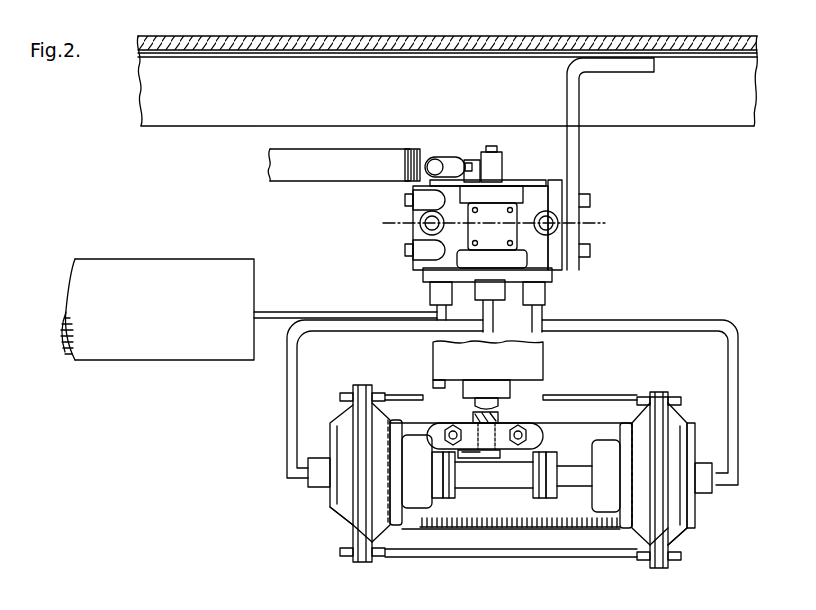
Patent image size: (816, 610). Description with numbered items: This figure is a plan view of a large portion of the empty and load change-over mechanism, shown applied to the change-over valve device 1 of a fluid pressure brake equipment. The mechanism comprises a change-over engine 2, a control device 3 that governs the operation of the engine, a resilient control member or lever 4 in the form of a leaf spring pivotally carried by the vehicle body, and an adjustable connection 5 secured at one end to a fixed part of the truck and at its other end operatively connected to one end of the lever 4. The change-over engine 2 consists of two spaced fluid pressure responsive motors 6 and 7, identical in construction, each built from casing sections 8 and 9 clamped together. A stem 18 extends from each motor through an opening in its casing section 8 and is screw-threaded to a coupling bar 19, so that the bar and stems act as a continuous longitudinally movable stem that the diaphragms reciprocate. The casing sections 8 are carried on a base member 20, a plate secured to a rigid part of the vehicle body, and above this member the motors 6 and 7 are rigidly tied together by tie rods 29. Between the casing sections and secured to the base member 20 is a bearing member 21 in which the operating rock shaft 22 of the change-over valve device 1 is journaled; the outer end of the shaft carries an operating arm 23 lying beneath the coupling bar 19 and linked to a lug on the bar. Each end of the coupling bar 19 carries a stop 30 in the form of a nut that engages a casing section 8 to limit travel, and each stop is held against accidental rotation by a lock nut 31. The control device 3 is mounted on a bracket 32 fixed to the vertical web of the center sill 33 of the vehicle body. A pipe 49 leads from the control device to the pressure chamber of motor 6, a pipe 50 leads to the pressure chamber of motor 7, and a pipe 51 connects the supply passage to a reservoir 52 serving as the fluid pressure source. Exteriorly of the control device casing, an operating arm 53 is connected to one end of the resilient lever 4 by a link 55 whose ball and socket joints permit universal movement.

The change-over valve device 1 is at (430, 358).
The change-over engine 2 is at (672, 396).
The control device 3 is at (540, 182).
The resilient control member or lever 4 is at (326, 151).
The adjustable connection 5 is at (614, 215).
The fluid pressure responsive motor 6 is at (342, 410).
The fluid pressure responsive motor 7 is at (690, 420).
The casing section 8 is at (386, 530).
The casing section 9 is at (340, 528).
The stem 18 is at (568, 480).
The coupling bar 19 is at (522, 489).
The base member 20 is at (598, 424).
The bearing member 21 is at (522, 432).
The operating rock shaft 22 is at (487, 412).
The operating arm 23 is at (476, 457).
The tie rods 29 is at (650, 396).
The stop 30 is at (438, 497).
The lock nut 31 is at (506, 488).
The bracket 32 is at (572, 160).
The center sill 33 is at (703, 116).
The pipe 49 is at (291, 352).
The pipe 50 is at (733, 400).
The pipe 51 is at (342, 313).
The reservoir 52 is at (232, 299).
The operating arm 53 is at (474, 165).
The link 55 is at (447, 162).